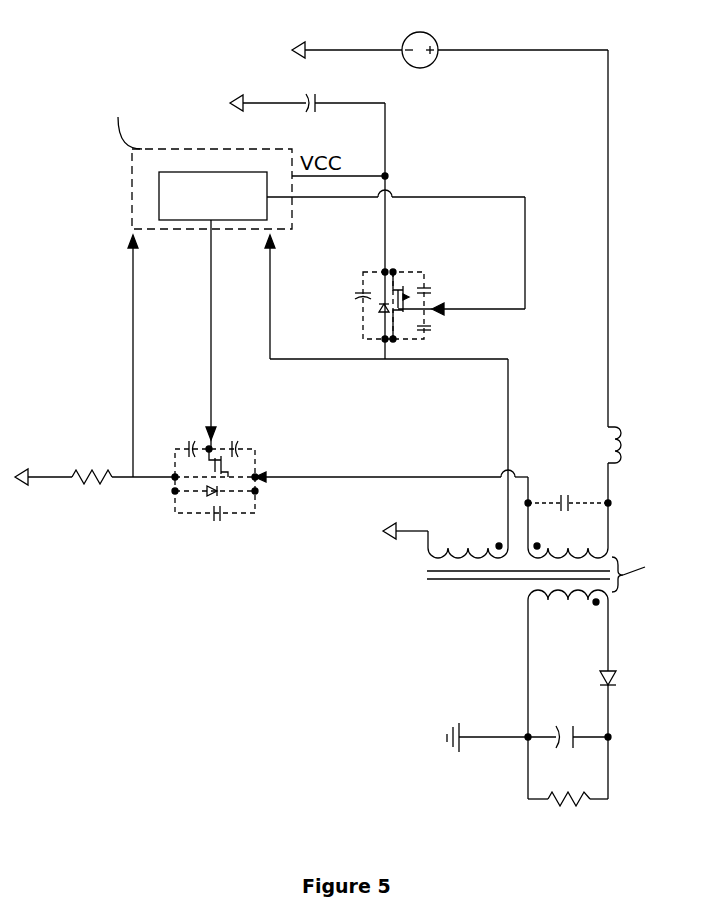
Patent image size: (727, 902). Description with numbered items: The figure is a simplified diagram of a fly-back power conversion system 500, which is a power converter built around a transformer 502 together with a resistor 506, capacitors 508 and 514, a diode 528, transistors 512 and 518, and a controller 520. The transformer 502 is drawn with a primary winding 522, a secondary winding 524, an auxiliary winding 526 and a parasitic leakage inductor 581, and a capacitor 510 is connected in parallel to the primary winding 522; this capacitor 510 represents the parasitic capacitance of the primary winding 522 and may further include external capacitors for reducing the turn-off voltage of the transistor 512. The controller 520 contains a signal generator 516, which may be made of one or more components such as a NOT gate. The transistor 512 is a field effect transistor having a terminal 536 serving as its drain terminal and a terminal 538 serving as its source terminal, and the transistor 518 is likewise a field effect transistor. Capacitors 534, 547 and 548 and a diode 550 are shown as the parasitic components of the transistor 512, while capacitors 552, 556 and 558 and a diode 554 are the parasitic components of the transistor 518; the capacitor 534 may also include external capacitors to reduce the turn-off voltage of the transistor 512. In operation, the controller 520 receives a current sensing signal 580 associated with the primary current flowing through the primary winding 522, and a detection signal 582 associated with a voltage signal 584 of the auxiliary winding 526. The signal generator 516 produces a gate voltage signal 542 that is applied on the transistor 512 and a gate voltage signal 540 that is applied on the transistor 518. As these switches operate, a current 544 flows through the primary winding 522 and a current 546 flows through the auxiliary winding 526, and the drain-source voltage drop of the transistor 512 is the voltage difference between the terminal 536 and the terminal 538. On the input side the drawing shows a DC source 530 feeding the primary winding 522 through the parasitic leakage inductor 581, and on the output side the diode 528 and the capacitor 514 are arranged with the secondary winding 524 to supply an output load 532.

The power conversion system 500 is at (88, 709).
The transformer 502 is at (524, 567).
The resistor 506 is at (95, 480).
The capacitor 508 is at (313, 95).
The capacitor 510 is at (570, 505).
The transistor 512 is at (212, 484).
The capacitor 514 is at (573, 730).
The signal generator 516 is at (248, 172).
The transistor 518 is at (401, 314).
The controller 520 is at (132, 168).
The primary winding 522 is at (608, 553).
The secondary winding 524 is at (610, 595).
The auxiliary winding 526 is at (428, 552).
The diode 528 is at (616, 677).
The DC voltage source 530 is at (432, 40).
The output load resistor 532 is at (608, 755).
The capacitor 534 is at (218, 514).
The terminal 536 is at (256, 480).
The terminal 538 is at (175, 479).
The gate voltage signal 540 is at (525, 267).
The gate voltage signal 542 is at (211, 388).
The current 544 is at (424, 477).
The current 546 is at (508, 385).
The capacitor 547 is at (237, 446).
The capacitor 548 is at (189, 448).
The diode 550 is at (205, 492).
The capacitor 552 is at (362, 295).
The diode 554 is at (384, 311).
The capacitor 556 is at (430, 290).
The capacitor 558 is at (430, 327).
The current sensing signal 580 is at (133, 358).
The parasitic leakage inductor 581 is at (622, 448).
The detection signal 582 is at (270, 305).
The voltage signal 584 is at (508, 503).